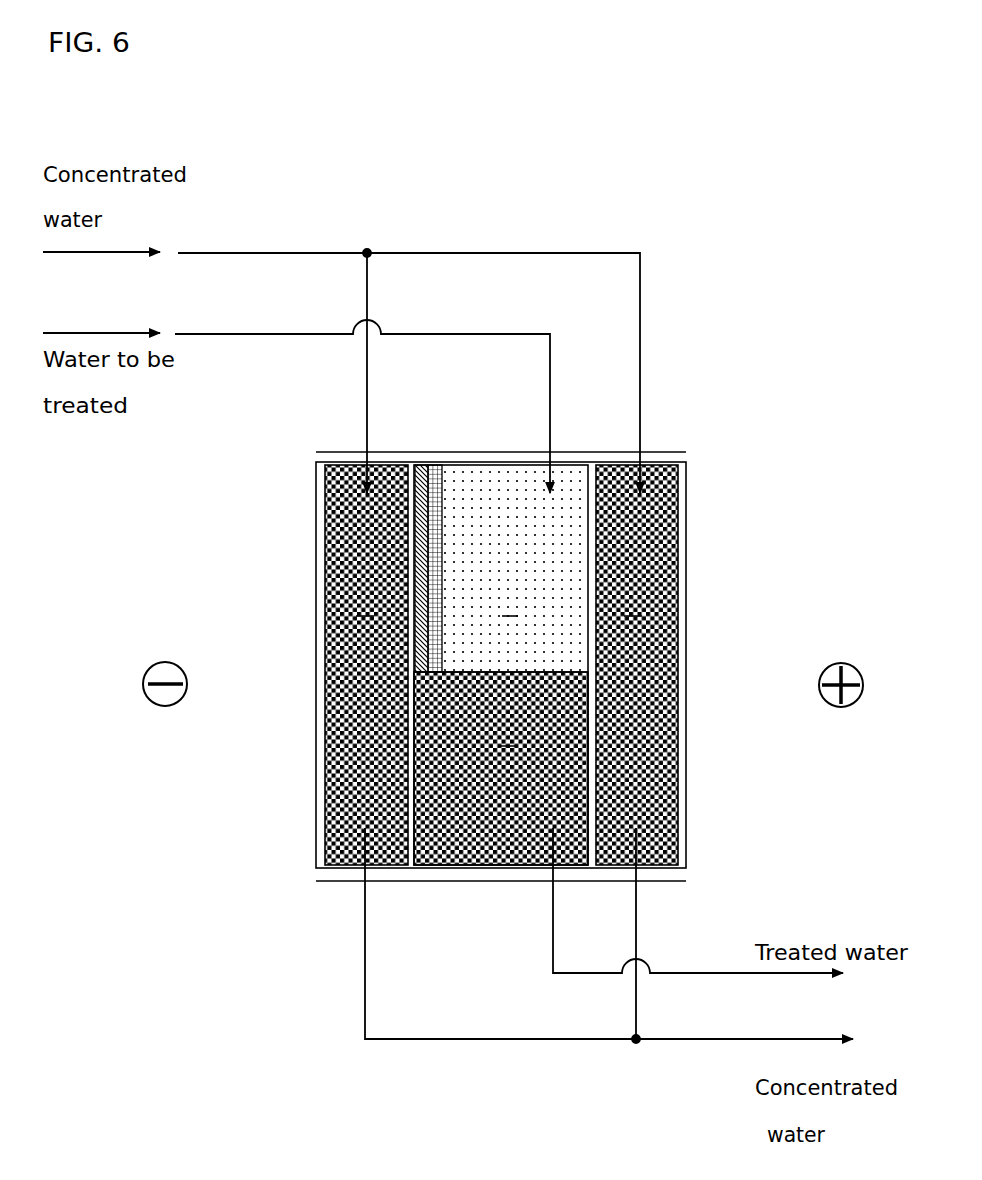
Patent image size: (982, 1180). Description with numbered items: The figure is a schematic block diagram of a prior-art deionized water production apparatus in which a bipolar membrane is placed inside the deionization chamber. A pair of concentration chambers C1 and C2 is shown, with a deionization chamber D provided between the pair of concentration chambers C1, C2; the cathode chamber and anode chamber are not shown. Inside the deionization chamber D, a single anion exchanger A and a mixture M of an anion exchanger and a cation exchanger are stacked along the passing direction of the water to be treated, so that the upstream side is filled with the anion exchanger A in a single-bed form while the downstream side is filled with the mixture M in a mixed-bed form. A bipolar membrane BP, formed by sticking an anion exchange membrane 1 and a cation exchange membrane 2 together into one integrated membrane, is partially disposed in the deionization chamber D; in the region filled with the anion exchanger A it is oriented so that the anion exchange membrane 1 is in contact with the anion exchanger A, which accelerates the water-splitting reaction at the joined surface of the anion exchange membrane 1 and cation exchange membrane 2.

The concentration chamber C1 is at (662, 478).
The concentration chamber C2 is at (333, 478).
The deionization chamber D is at (497, 478).
The bipolar membrane BP is at (419, 510).
The anion exchange membrane 1 is at (435, 473).
The cation exchange membrane 2 is at (422, 473).
The mixture of an anion exchanger and a cation exchanger M is at (499, 668).
The anion exchanger A is at (510, 603).